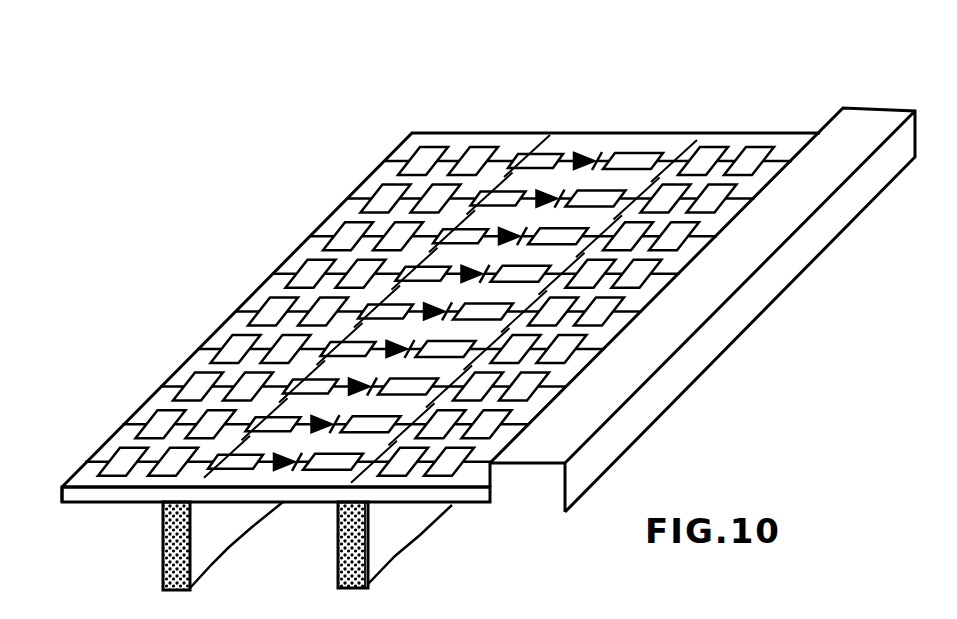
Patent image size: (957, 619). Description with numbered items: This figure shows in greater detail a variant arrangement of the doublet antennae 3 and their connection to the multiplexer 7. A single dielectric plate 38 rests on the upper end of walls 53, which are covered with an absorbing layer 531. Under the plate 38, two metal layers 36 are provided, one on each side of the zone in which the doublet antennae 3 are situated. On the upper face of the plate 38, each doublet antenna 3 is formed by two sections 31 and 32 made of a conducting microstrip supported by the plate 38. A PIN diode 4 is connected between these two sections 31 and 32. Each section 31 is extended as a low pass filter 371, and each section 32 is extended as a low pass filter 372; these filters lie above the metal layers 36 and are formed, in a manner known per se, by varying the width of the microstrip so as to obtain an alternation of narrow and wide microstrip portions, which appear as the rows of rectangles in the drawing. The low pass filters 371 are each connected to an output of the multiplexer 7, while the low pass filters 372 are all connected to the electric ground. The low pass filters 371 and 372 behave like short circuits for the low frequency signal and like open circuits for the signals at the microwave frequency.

The doublet antenna 3 is at (520, 73).
The PIN diode 4 is at (584, 160).
The multiplexer 7 is at (855, 127).
The section of doublet antenna 31 is at (640, 156).
The section of doublet antenna 32 is at (551, 147).
The metal layer 36 is at (83, 503).
The dielectric plate 38 is at (80, 484).
The wall 53 is at (162, 581).
The absorbing layer 531 is at (163, 549).
The low pass filter 371 is at (726, 141).
The low pass filter 372 is at (463, 150).